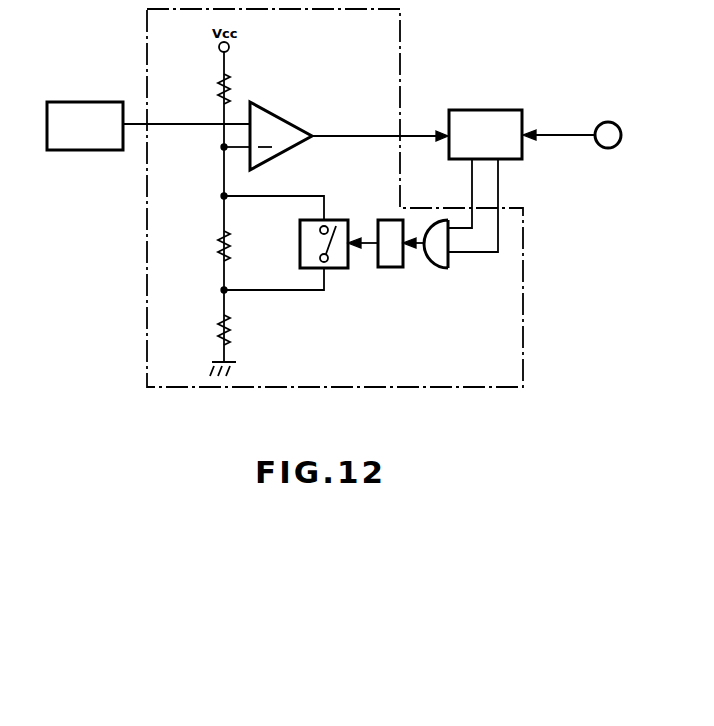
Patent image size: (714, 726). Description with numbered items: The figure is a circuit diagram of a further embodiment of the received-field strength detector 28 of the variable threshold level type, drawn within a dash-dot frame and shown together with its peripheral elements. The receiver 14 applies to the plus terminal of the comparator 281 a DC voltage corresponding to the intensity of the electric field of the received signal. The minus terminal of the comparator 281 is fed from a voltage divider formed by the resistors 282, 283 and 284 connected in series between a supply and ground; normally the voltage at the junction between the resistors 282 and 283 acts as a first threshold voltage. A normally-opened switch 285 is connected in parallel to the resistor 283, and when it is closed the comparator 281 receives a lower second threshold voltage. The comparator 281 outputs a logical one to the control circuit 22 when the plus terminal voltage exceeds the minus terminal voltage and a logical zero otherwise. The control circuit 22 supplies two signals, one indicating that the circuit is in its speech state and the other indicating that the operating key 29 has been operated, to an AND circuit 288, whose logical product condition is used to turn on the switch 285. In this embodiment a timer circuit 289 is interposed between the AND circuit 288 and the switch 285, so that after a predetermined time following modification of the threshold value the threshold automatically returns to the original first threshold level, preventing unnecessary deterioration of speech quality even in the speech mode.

The receiver 14 is at (80, 102).
The control circuit 22 is at (485, 110).
The received-field strength detector 28 is at (523, 307).
The operating key 29 is at (608, 122).
The comparator 281 is at (283, 118).
The resistor 282 is at (231, 88).
The resistor 283 is at (217, 247).
The resistor 284 is at (232, 328).
The normally-opened switch 285 is at (340, 218).
The AND circuit 288 is at (441, 270).
The timer circuit 289 is at (390, 270).